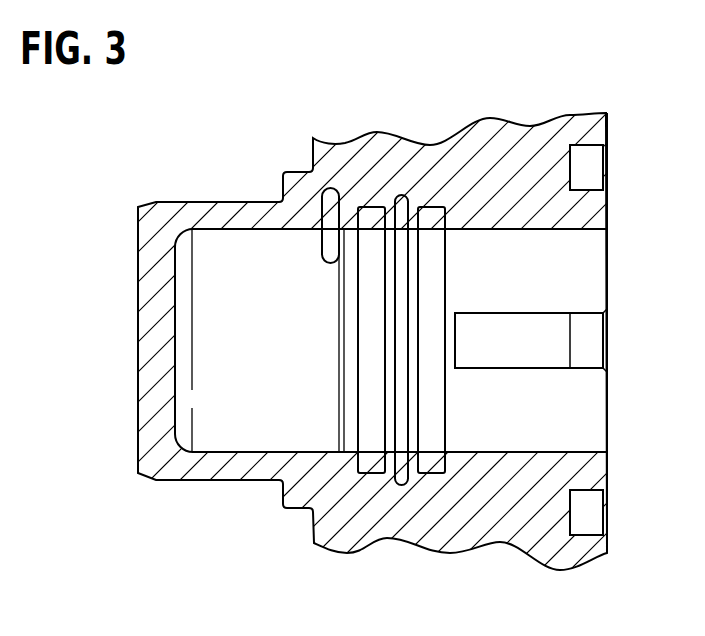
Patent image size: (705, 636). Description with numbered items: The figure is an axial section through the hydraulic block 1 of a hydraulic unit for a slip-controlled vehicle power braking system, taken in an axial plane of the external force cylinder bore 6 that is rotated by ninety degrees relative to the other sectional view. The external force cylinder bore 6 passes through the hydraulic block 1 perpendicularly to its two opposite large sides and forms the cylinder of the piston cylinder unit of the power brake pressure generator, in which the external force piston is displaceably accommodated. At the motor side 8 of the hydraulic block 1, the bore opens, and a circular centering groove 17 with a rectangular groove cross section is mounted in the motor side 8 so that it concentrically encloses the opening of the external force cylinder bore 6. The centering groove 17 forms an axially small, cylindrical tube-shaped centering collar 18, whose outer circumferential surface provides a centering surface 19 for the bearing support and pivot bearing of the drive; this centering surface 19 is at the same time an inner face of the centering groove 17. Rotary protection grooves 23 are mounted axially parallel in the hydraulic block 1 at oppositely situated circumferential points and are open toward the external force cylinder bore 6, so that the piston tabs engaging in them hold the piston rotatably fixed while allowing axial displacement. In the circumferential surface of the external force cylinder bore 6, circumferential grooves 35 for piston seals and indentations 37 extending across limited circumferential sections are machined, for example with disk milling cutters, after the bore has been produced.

The hydraulic block 1 is at (457, 148).
The external force cylinder bore 6 is at (220, 337).
The motor side 8 is at (608, 132).
The centering groove 17 is at (588, 162).
The centering collar 18 is at (588, 208).
The centering surface 19 is at (588, 190).
The rotary protection grooves 23 is at (527, 342).
The circumferential grooves 35 is at (430, 462).
The indentations 37 is at (402, 210).